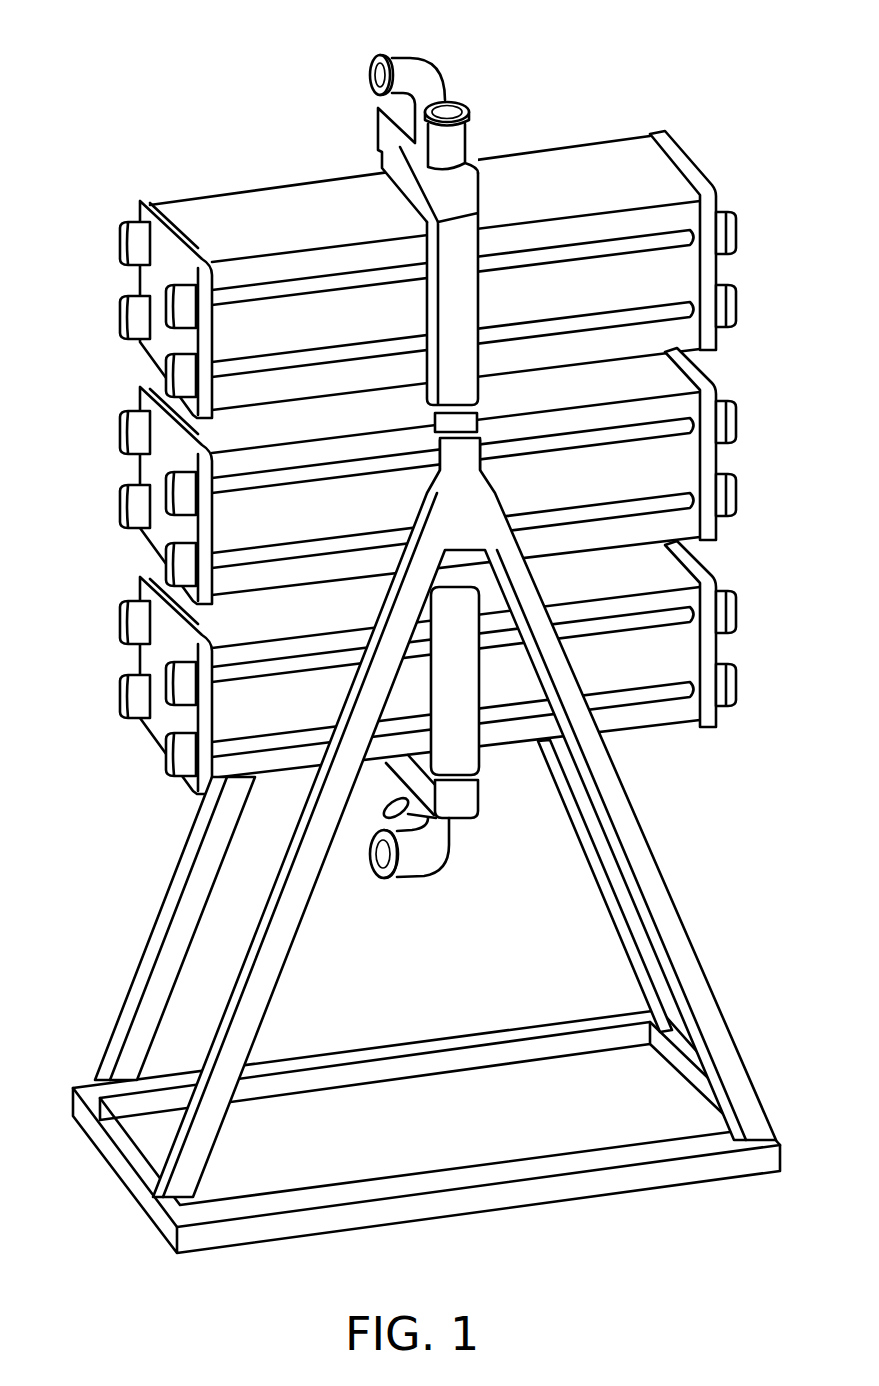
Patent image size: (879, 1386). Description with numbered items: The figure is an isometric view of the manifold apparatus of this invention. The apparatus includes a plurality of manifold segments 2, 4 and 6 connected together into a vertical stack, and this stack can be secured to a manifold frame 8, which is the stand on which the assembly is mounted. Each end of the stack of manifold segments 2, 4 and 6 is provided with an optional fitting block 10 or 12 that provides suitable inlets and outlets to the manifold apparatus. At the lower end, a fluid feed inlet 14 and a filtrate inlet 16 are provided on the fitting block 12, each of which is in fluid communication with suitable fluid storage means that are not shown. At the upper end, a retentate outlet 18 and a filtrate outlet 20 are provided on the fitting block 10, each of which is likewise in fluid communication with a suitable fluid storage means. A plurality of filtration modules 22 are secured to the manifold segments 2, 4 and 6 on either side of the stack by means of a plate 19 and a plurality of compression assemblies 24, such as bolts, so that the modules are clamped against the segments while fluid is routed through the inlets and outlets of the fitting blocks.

The manifold segment 2 is at (465, 236).
The manifold segment 4 is at (466, 416).
The manifold segment 6 is at (462, 688).
The manifold frame 8 is at (660, 891).
The fitting block 10 is at (378, 122).
The fitting block 12 is at (478, 820).
The fluid feed inlet 14 is at (390, 816).
The filtrate inlet 16 is at (410, 880).
The retentate outlet 18 is at (463, 103).
The plate 19 is at (150, 199).
The filtrate outlet 20 is at (430, 62).
The filtration module 22 is at (243, 323).
The compression assembly 24 is at (120, 232).